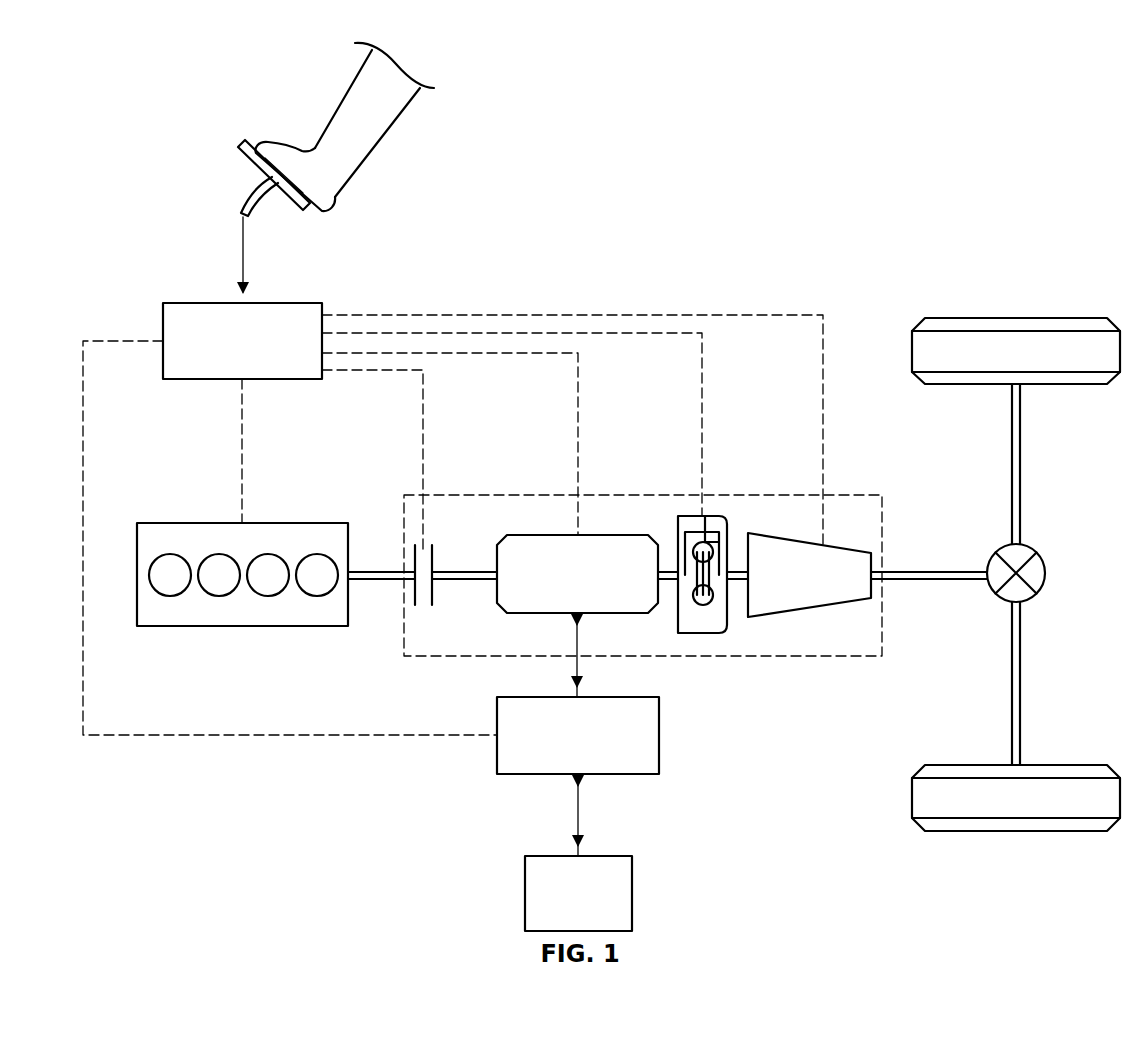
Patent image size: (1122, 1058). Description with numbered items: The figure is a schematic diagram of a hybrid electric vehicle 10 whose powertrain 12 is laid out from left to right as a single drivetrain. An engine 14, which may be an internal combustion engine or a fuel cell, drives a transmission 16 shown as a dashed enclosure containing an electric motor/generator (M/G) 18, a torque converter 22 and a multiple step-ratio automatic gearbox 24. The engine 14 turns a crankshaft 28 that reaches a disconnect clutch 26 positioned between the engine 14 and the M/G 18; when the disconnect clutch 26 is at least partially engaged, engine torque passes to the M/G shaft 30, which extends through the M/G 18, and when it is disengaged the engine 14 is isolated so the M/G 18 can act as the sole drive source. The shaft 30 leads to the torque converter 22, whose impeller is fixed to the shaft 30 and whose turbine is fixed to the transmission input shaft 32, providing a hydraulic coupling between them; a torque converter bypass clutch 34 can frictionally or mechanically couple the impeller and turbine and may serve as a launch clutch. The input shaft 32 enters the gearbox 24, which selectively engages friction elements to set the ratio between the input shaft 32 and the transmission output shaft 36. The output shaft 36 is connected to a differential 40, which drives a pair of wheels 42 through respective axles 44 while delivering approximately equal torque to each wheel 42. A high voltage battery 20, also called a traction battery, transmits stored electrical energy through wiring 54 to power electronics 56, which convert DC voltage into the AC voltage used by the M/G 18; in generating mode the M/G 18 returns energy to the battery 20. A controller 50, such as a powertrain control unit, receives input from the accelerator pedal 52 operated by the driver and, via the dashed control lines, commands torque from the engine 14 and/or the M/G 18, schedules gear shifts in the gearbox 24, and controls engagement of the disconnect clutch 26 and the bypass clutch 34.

The vehicle 10 is at (891, 238).
The powertrain 12 is at (345, 781).
The engine 14 is at (160, 524).
The transmission 16 is at (631, 495).
The electric motor/generator (M/G) 18 is at (552, 535).
The high voltage battery 20 is at (524, 882).
The torque converter 22 is at (695, 634).
The gearbox 24 is at (800, 618).
The disconnect clutch 26 is at (418, 594).
The crankshaft 28 is at (382, 568).
The M/G shaft 30 is at (470, 568).
The transmission input shaft 32 is at (734, 570).
The torque converter bypass clutch 34 is at (706, 517).
The transmission output shaft 36 is at (941, 570).
The differential 40 is at (1046, 580).
The wheels 42 is at (1016, 318).
The axles 44 is at (1022, 466).
The controller 50 is at (182, 302).
The accelerator pedal 52 is at (250, 161).
The wiring 54 is at (576, 815).
The power electronics 56 is at (661, 736).